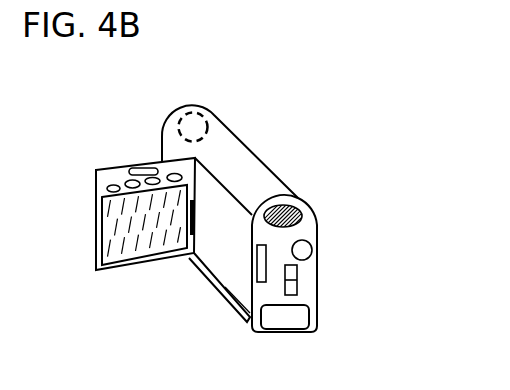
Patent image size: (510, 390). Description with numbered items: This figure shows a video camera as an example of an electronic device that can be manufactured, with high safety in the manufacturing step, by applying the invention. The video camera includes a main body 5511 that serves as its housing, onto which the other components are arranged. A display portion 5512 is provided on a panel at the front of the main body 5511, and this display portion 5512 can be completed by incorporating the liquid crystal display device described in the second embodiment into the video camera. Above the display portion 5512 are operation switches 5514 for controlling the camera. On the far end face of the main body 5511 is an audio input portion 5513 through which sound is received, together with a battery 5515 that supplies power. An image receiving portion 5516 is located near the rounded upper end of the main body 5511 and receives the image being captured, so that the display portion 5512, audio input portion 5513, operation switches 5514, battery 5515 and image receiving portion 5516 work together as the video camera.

The main body 5511 is at (233, 157).
The display portion 5512 is at (145, 238).
The audio input portion 5513 is at (297, 210).
The operation switches 5514 is at (133, 177).
The battery 5515 is at (275, 318).
The image receiving portion 5516 is at (190, 114).